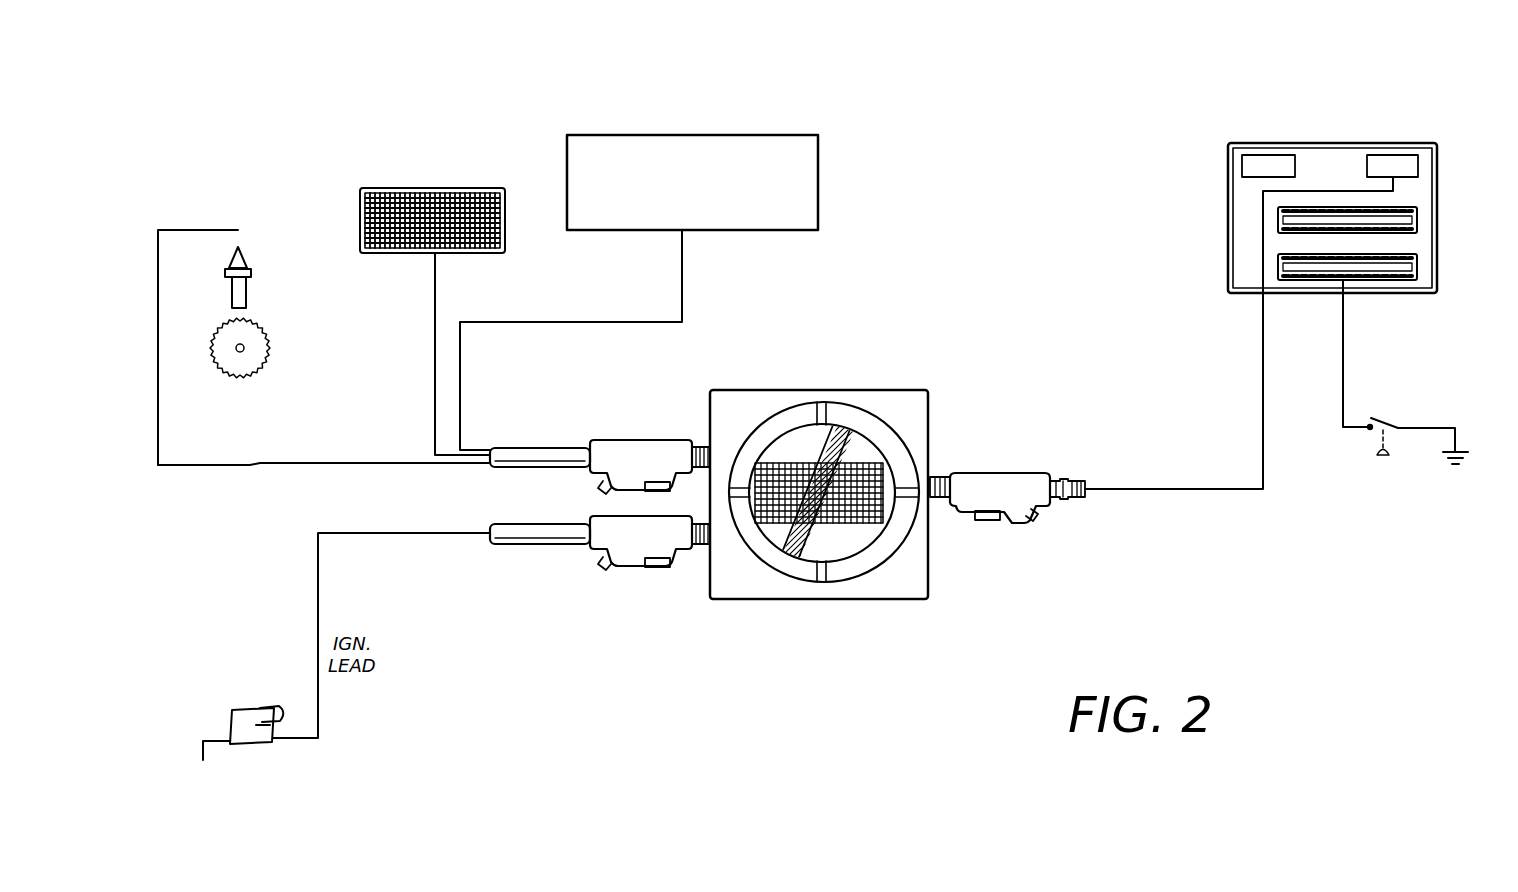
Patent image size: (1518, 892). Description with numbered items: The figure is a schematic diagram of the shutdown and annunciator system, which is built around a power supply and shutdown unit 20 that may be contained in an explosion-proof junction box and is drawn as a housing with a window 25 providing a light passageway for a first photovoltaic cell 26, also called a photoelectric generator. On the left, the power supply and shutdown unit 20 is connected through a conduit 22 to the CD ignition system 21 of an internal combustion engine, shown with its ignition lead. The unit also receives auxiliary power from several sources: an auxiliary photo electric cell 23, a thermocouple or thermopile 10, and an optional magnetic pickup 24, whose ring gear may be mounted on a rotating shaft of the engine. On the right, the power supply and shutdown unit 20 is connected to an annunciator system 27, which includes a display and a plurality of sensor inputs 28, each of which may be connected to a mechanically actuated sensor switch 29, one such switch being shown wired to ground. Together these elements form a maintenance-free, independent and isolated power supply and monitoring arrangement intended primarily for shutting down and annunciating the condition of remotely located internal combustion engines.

The thermocouple or thermopile 10 is at (765, 230).
The power supply and shutdown unit 20 is at (928, 446).
The CD ignition system 21 is at (248, 718).
The conduit 22 is at (531, 456).
The auxiliary photo electric cell 23 is at (405, 186).
The magnetic pickup 24 is at (266, 343).
The window 25 is at (855, 540).
The first photovoltaic cell 26 is at (845, 462).
The annunciator system 27 is at (1437, 186).
The sensor inputs 28 is at (1417, 220).
The mechanically actuated sensor switch 29 is at (1378, 417).